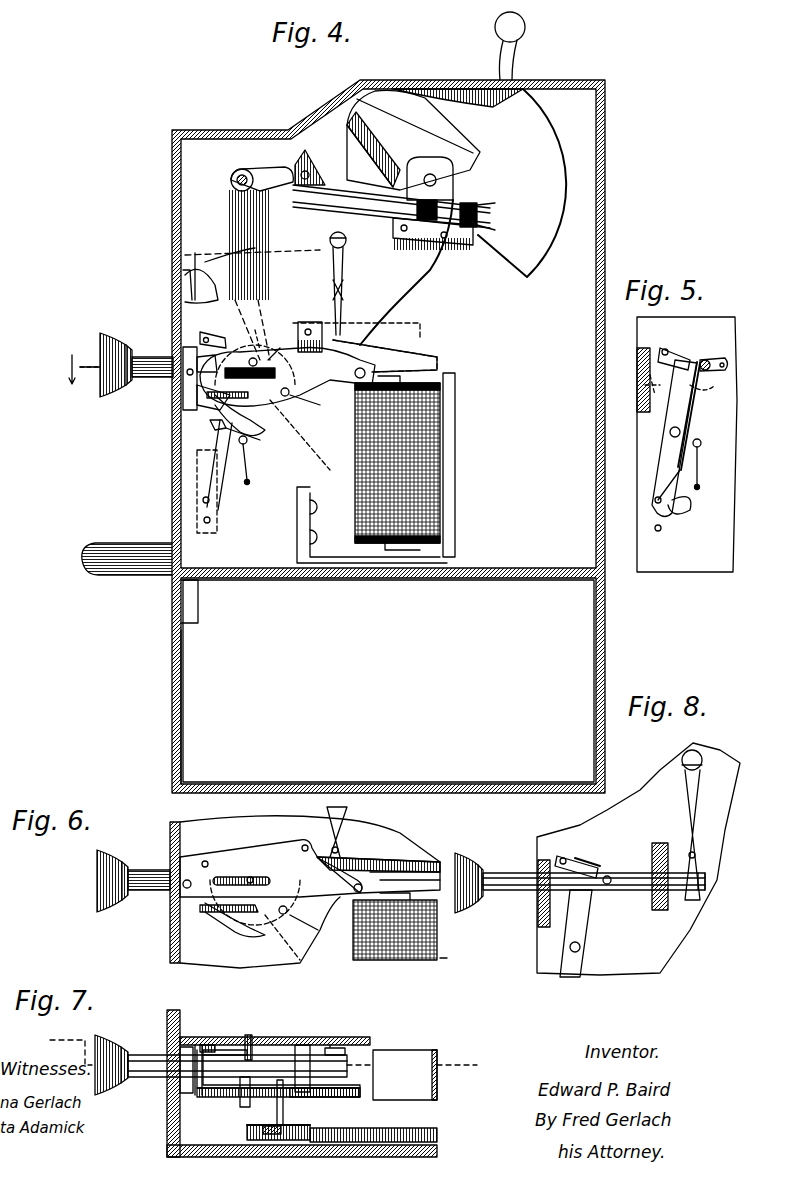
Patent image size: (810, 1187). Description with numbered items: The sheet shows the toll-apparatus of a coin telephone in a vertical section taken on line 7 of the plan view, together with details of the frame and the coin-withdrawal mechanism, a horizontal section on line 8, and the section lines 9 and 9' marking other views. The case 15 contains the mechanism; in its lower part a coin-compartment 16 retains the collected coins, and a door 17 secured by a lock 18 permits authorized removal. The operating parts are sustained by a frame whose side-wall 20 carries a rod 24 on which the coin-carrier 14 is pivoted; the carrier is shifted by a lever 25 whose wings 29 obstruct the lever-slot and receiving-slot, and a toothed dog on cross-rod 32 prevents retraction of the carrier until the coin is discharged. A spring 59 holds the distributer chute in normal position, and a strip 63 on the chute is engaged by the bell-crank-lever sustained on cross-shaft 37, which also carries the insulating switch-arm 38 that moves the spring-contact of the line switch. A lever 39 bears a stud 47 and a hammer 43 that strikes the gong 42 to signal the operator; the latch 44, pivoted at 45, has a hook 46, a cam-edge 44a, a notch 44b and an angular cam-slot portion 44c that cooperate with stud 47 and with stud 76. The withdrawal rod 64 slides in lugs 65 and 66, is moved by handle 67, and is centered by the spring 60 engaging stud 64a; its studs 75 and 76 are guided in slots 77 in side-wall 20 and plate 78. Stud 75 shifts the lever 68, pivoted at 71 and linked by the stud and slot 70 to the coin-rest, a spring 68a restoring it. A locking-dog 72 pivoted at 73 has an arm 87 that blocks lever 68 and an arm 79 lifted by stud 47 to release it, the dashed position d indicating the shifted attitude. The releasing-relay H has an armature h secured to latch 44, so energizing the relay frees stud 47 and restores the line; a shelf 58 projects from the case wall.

In FIG. 4, the section line 7— 7 is at (73, 369).
In FIG. 7, the section line 8— 8 is at (264, 1054).
In FIG. 4, the section line 9— 9 is at (391, 219).
In FIG. 4, the contact blocks 9' is at (464, 202).
In FIG. 4, the coin-carrier 14 is at (413, 140).
In FIG. 4, the case 15 is at (172, 236).
In FIG. 6, the case 15 is at (170, 937).
In FIG. 7, the case 15 is at (167, 1122).
In FIG. 4, the coin-compartment 16 is at (388, 681).
In FIG. 4, the door 17 is at (187, 660).
In FIG. 4, the lock 18 is at (198, 618).
In FIG. 4, the side-wall 20 is at (440, 292).
In FIG. 5, the side-wall 20 is at (687, 444).
In FIG. 6, the side-wall 20 is at (310, 910).
In FIG. 7, the side-wall 20 is at (370, 1037).
In FIG. 8, the side-wall 20 is at (638, 859).
In FIG. 4, the rod 24 is at (436, 178).
In FIG. 4, the lever 25 is at (520, 42).
In FIG. 4, the wings 29 is at (479, 183).
In FIG. 4, the cross-rod 32 is at (309, 172).
In FIG. 4, the cross-shaft 37 is at (240, 178).
In FIG. 4, the switch-arm 38 is at (264, 167).
In FIG. 4, the lever 39 is at (185, 257).
In FIG. 7, the lever 39 is at (270, 1140).
In FIG. 7, the gong 42 is at (437, 1130).
In FIG. 7, the hammer 43 is at (295, 1140).
In FIG. 4, the latch 44 is at (253, 355).
In FIG. 7, the latch 44 is at (250, 1135).
In FIG. 4, the cam-edge 44a is at (295, 400).
In FIG. 6, the cam-edge 44a is at (300, 925).
In FIG. 4, the notch or hook 44b is at (272, 402).
In FIG. 6, the notch or hook 44b is at (270, 920).
In FIG. 4, the angular portion of cam-slot 44c is at (280, 350).
In FIG. 4, the pivot 45 is at (364, 368).
In FIG. 4, the hook 46 is at (250, 425).
In FIG. 6, the hook 46 is at (255, 935).
In FIG. 4, the stud 47 is at (290, 396).
In FIG. 6, the stud 47 is at (290, 912).
In FIG. 7, the stud 47 is at (283, 1112).
In FIG. 4, the shelf 58 is at (127, 575).
In FIG. 4, the spring 59 is at (185, 278).
In FIG. 4, the centralizing spring 60 is at (342, 280).
In FIG. 6, the centralizing spring 60 is at (345, 815).
In FIG. 8, the centralizing spring 60 is at (685, 805).
In FIG. 4, the flexible extension or strip 63 is at (185, 287).
In FIG. 4, the rod 64 is at (150, 378).
In FIG. 6, the rod 64 is at (150, 878).
In FIG. 7, the rod 64 is at (143, 1058).
In FIG. 8, the rod 64 is at (500, 873).
In FIG. 7, the stud 64a is at (340, 1045).
In FIG. 8, the stud 64a is at (705, 875).
In FIG. 4, the lug 65 is at (186, 350).
In FIG. 5, the lug 65 is at (637, 372).
In FIG. 7, the lug 65 is at (183, 1080).
In FIG. 8, the lug 65 is at (540, 912).
In FIG. 4, the lug 66 is at (309, 322).
In FIG. 7, the lug 66 is at (305, 1045).
In FIG. 8, the lug 66 is at (668, 905).
In FIG. 4, the handle 67 is at (104, 340).
In FIG. 6, the handle 67 is at (100, 888).
In FIG. 7, the handle 67 is at (106, 1040).
In FIG. 8, the handle 67 is at (470, 912).
In FIG. 4, the lever 68 is at (205, 470).
In FIG. 5, the lever 68 is at (672, 420).
In FIG. 7, the lever 68 is at (250, 1050).
In FIG. 8, the lever 68 is at (590, 920).
In FIG. 4, the spring 68a is at (230, 468).
In FIG. 5, the spring 68a is at (675, 468).
In FIG. 4, the stud and slot 70 is at (248, 484).
In FIG. 5, the stud and slot 70 is at (686, 505).
In FIG. 5, the pivot 71 is at (684, 440).
In FIG. 8, the pivot 71 is at (570, 948).
In FIG. 4, the locking-dog 72 is at (200, 370).
In FIG. 5, the locking-dog 72 is at (675, 352).
In FIG. 7, the locking-dog 72 is at (195, 1090).
In FIG. 8, the locking-dog 72 is at (567, 858).
In FIG. 4, the pivot 73 is at (205, 335).
In FIG. 5, the pivot 73 is at (665, 350).
In FIG. 7, the pivot 73 is at (208, 1045).
In FIG. 8, the pivot 73 is at (560, 858).
In FIG. 5, the stud 75 is at (710, 370).
In FIG. 7, the stud 75 is at (252, 1040).
In FIG. 4, the stud 76 is at (258, 358).
In FIG. 6, the stud 76 is at (254, 878).
In FIG. 7, the stud 76 is at (255, 1097).
In FIG. 8, the stud 76 is at (610, 877).
In FIG. 5, the slots 77 is at (718, 358).
In FIG. 6, the slots 77 is at (228, 877).
In FIG. 7, the slots 77 is at (220, 1097).
In FIG. 6, the plate 78 is at (271, 868).
In FIG. 7, the plate 78 is at (350, 1097).
In FIG. 4, the arm or extension 79 is at (210, 400).
In FIG. 5, the arm or extension 79 is at (650, 405).
In FIG. 6, the arm or extension 79 is at (235, 915).
In FIG. 5, the arm 87 is at (705, 360).
In FIG. 7, the arm 87 is at (225, 1050).
In FIG. 8, the arm 87 is at (588, 864).
In FIG. 4, the dashed position d is at (257, 319).
In FIG. 4, the armature h is at (440, 360).
In FIG. 6, the armature h is at (418, 868).
In FIG. 7, the armature h is at (405, 1058).
In FIG. 4, the releasing-relay H is at (440, 477).
In FIG. 6, the releasing-relay H is at (437, 955).
In FIG. 8, the releasing-relay H is at (451, 957).